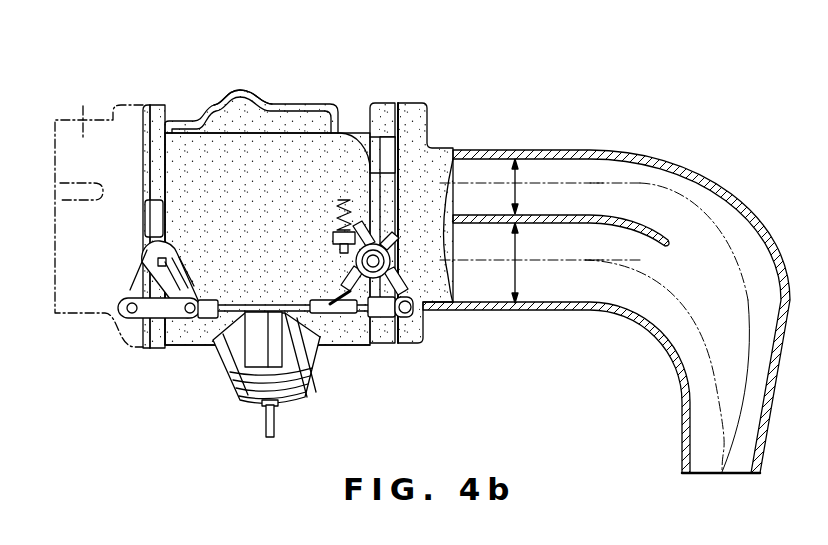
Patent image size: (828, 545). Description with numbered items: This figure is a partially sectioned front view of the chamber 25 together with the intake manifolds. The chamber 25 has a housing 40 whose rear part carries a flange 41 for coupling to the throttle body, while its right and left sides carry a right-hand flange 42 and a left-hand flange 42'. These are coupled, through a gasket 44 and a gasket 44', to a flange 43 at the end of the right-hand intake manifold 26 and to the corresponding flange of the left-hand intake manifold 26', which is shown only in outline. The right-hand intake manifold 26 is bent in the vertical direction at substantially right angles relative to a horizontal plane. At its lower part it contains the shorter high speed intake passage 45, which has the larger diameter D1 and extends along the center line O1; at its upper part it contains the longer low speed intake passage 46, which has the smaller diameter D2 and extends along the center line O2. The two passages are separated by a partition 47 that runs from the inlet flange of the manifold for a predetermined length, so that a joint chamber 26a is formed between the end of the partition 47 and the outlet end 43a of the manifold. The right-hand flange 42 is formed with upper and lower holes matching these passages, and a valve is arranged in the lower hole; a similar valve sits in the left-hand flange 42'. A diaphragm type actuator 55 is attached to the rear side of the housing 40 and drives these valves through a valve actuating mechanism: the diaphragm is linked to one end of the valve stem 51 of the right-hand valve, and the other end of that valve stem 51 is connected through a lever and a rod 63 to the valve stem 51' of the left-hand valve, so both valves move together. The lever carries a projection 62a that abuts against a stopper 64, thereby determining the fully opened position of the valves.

The chamber 25 is at (230, 90).
The right-hand intake manifold 26 is at (606, 316).
The left-hand intake manifold 26' is at (99, 214).
The joint chamber 26a is at (730, 306).
The housing 40 is at (268, 236).
The flange 41 is at (194, 112).
The right-hand flange 42 is at (366, 204).
The left-hand flange 42' is at (169, 197).
The flange 43 is at (433, 114).
The outlet end 43a is at (751, 476).
The gasket 44 is at (418, 204).
The gasket 44' is at (138, 204).
The high speed intake passage 45 is at (571, 302).
The low speed intake passage 46 is at (664, 188).
The partition 47 is at (641, 235).
The valve stem 51 is at (392, 258).
The valve stem 51' is at (144, 275).
The diaphragm type actuator 55 is at (237, 380).
The projection 62a is at (352, 292).
The rod 63 is at (267, 306).
The stopper 64 is at (333, 242).
The diameter of high speed intake passage D1 is at (574, 263).
The diameter of low speed intake passage D2 is at (574, 186).
The center line of high speed intake passage O1 is at (715, 360).
The center line of low speed intake passage O2 is at (708, 236).